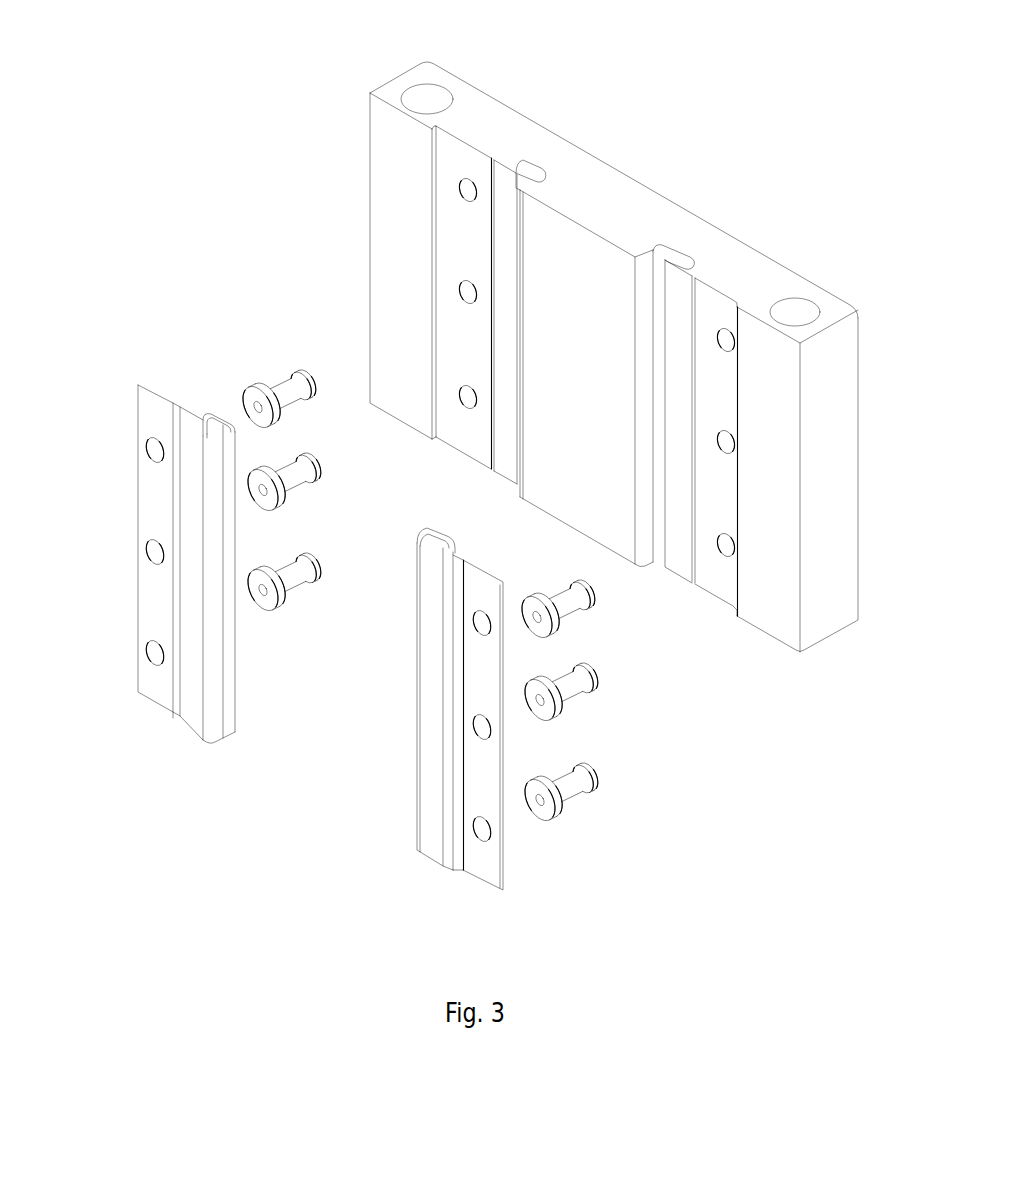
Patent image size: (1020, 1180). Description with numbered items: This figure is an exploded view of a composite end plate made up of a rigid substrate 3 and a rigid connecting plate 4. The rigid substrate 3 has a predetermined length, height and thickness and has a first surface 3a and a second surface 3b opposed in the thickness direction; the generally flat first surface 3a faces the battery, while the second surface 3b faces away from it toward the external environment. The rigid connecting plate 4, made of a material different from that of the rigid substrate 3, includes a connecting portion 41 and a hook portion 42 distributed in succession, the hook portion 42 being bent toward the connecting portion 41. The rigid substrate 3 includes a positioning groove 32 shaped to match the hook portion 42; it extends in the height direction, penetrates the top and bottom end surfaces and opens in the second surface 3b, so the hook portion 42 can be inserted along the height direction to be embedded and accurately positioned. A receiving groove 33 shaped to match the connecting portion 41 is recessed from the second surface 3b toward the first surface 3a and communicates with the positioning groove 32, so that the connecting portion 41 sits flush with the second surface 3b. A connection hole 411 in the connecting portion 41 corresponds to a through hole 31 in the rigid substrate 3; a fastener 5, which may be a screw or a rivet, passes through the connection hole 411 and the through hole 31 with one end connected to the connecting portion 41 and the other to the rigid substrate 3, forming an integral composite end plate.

The rigid substrate 3 is at (586, 355).
The first surface 3a is at (806, 277).
The second surface 3b is at (384, 199).
The through hole 31 is at (469, 398).
The positioning groove 32 is at (529, 168).
The receiving groove 33 is at (470, 153).
The rigid connecting plate 4 is at (287, 664).
The connecting portion 41 is at (287, 664).
The connection hole 411 is at (152, 551).
The hook portion 42 is at (443, 530).
The fastener 5 is at (285, 385).